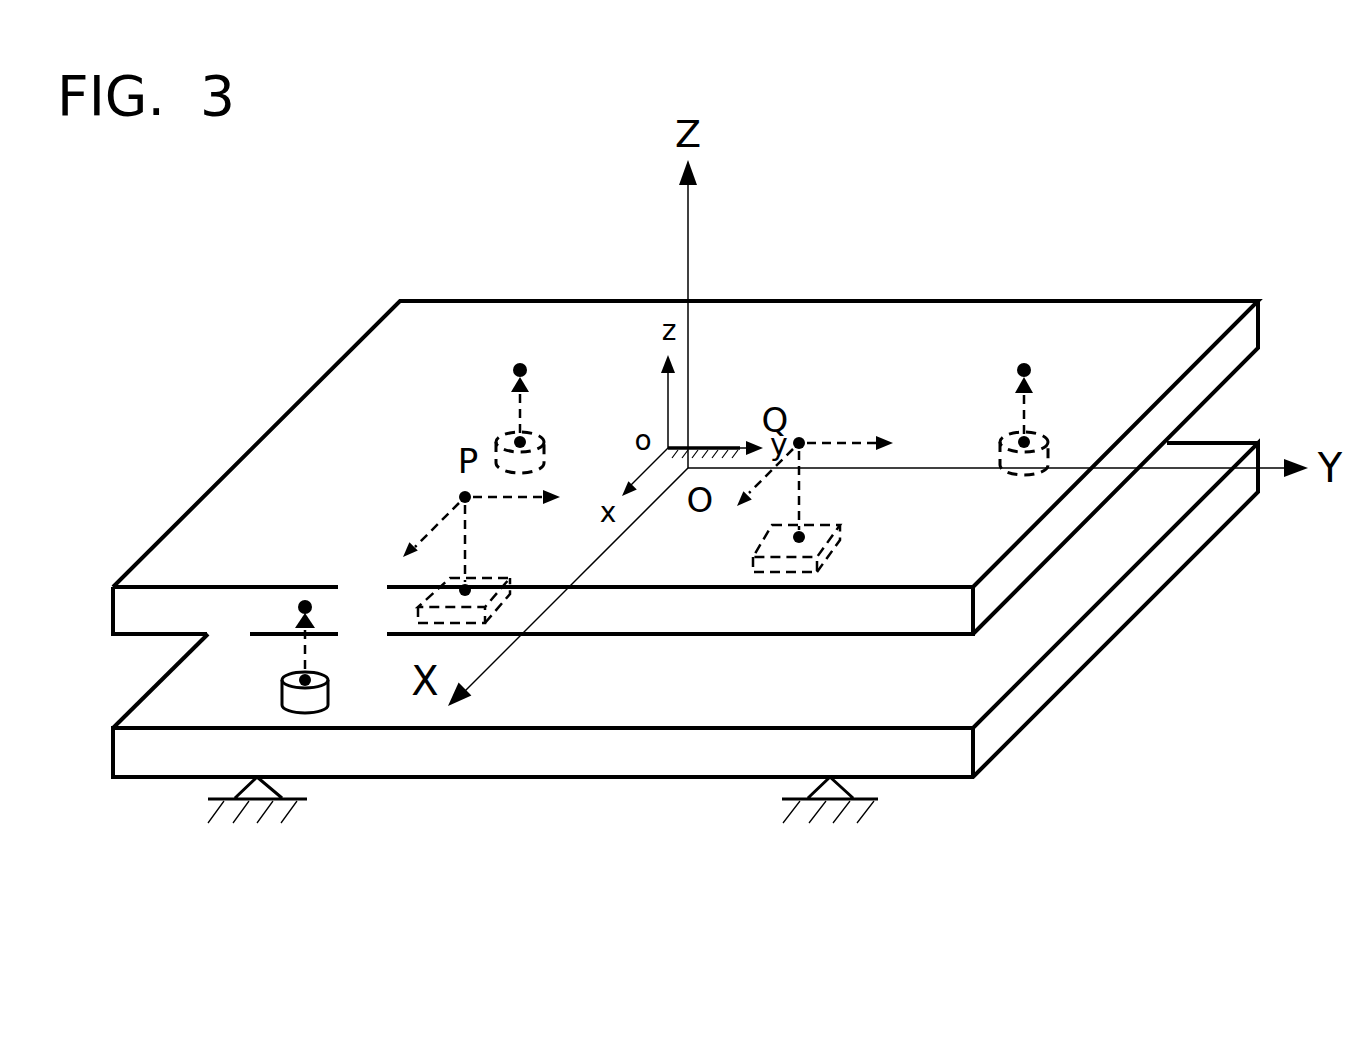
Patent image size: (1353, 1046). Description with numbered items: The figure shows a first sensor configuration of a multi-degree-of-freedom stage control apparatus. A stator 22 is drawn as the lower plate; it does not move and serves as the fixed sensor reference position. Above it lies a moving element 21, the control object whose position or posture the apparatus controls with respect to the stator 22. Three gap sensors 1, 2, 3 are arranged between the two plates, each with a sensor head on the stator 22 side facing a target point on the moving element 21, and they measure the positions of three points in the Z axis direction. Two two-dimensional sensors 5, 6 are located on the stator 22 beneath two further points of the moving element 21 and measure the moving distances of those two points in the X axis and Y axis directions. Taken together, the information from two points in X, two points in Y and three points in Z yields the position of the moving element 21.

The gap sensor 1 is at (287, 675).
The gap sensor 2 is at (503, 432).
The gap sensor 3 is at (1002, 440).
The two dimensional sensor 5 is at (463, 610).
The two dimensional sensor 6 is at (827, 567).
The moving element 21 is at (1197, 395).
The stator 22 is at (1107, 628).